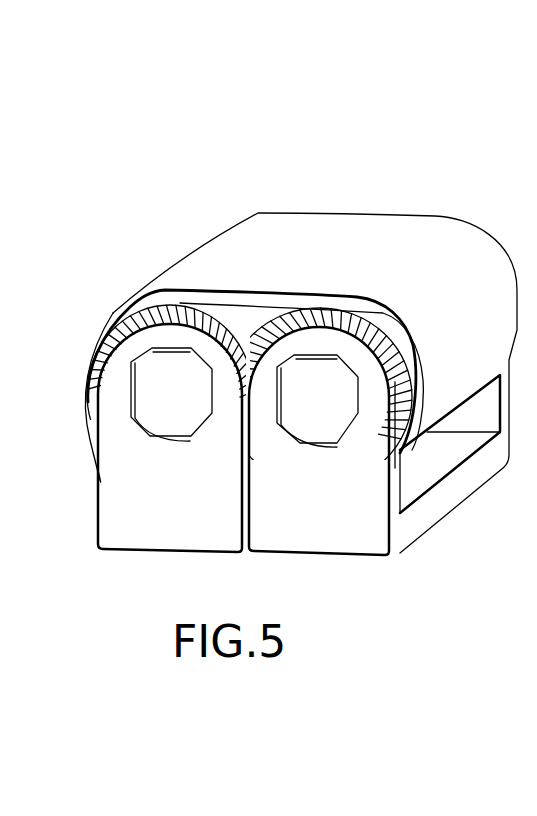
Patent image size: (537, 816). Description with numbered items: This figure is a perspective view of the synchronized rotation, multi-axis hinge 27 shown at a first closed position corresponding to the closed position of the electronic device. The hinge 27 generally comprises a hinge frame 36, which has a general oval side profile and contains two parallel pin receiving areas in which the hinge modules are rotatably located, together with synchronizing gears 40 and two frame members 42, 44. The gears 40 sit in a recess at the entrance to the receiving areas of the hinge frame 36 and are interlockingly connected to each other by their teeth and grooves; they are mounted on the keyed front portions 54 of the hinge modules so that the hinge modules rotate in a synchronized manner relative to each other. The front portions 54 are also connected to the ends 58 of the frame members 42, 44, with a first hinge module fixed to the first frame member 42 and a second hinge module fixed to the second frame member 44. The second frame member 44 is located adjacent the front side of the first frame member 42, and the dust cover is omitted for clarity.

The hinge 27 is at (283, 369).
The hinge frame 36 is at (326, 220).
The synchronizing gears 40 is at (128, 318).
The first frame member 42 is at (140, 537).
The second frame member 44 is at (280, 543).
The front portions 54 is at (137, 393).
The ends 58 is at (410, 340).